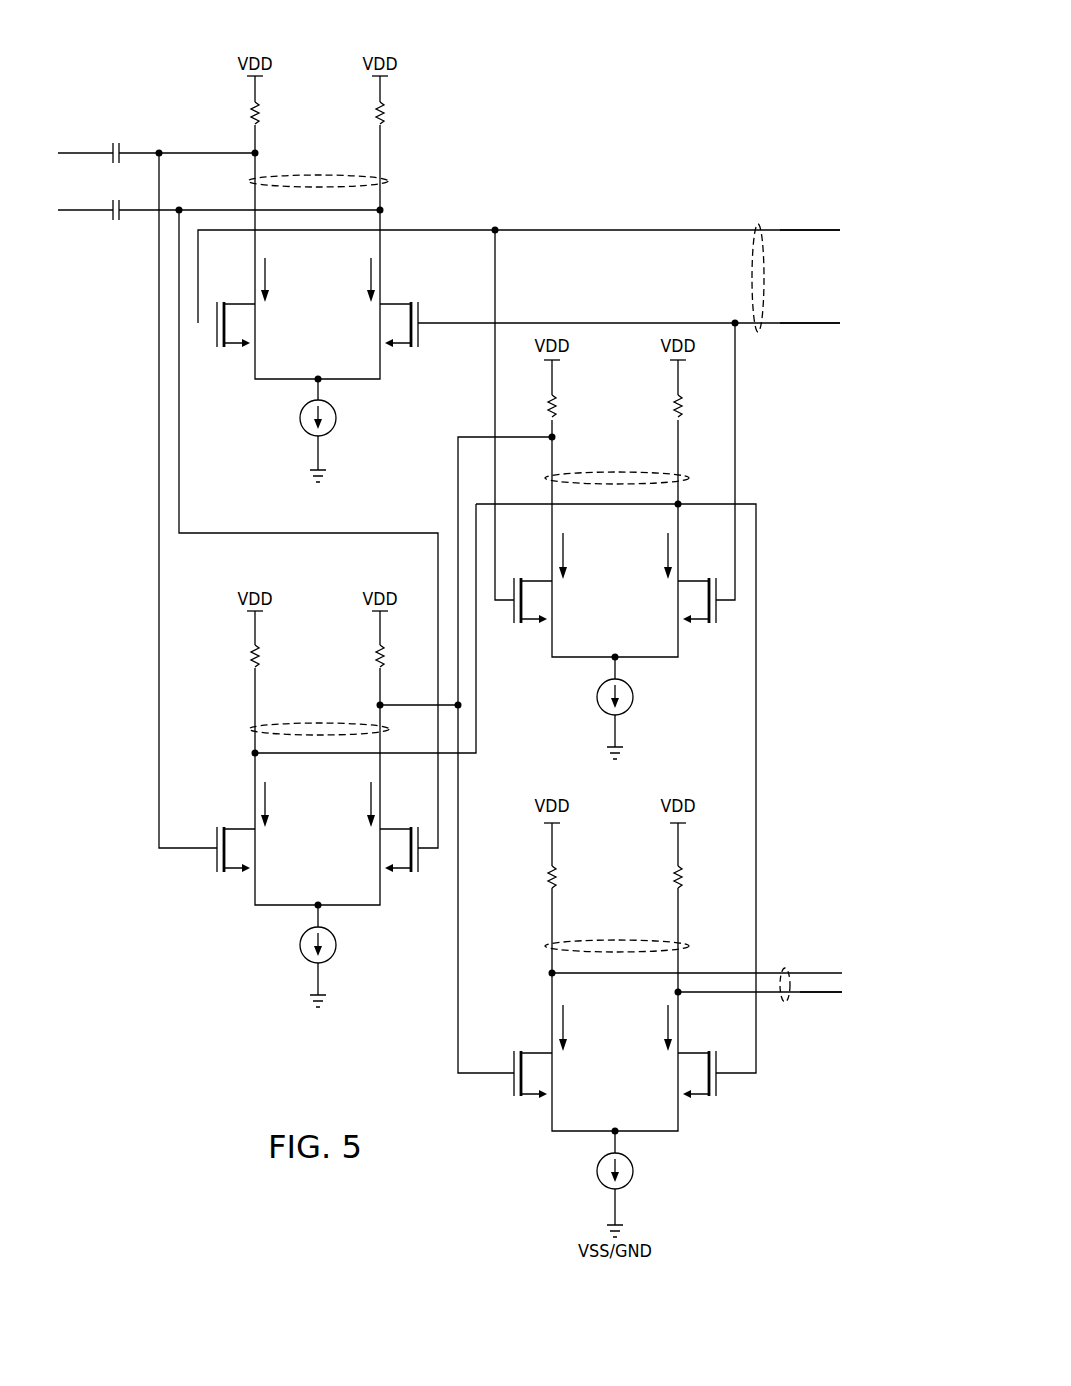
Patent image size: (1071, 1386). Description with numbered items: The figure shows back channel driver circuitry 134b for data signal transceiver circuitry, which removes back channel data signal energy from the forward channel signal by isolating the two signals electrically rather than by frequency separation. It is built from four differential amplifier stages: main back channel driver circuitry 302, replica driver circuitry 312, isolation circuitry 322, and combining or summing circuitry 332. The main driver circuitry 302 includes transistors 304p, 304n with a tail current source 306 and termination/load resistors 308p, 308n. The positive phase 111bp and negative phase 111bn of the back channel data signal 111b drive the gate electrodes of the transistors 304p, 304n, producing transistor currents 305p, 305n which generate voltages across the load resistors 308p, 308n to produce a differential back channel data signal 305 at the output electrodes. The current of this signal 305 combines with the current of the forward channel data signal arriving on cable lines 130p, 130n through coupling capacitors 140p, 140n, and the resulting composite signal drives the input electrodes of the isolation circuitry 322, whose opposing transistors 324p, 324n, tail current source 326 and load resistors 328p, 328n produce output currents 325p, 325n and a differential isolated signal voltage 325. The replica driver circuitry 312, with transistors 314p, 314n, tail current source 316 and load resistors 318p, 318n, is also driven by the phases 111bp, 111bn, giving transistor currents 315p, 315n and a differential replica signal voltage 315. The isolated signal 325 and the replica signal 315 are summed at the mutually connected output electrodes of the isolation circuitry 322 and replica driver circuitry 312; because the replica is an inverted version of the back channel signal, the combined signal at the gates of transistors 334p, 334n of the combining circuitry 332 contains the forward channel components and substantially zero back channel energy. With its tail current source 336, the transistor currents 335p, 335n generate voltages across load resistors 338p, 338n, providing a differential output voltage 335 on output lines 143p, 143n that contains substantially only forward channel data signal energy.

The positive cable line 130p is at (77, 151).
The negative cable line 130n is at (77, 213).
The coupling capacitor 140p is at (115, 144).
The coupling capacitor 140n is at (118, 219).
The back channel driver circuitry 134b is at (677, 140).
The termination/load resistor 308p is at (253, 113).
The termination/load resistor 308n is at (377, 110).
The differential back channel data signal 305 is at (250, 181).
The transistor current 305p is at (268, 273).
The transistor current 305n is at (368, 273).
The transistor 304p is at (205, 333).
The transistor 304n is at (433, 308).
The main back channel driver circuitry 302 is at (335, 339).
The tail current source 306 is at (299, 418).
The back channel data signal 111b is at (758, 224).
The positive phase of back channel data signal 111bp is at (800, 228).
The negative phase of back channel data signal 111bn is at (802, 324).
The load resistor 318p is at (557, 404).
The load resistor 318n is at (674, 413).
The differential signal voltage 315 is at (686, 478).
The transistor current 315p is at (566, 549).
The transistor current 315n is at (666, 550).
The transistor 314p is at (502, 617).
The transistor 314n is at (727, 617).
The replica driver circuitry 312 is at (637, 616).
The tail current source 316 is at (636, 699).
The load resistor 328p is at (259, 657).
The load resistor 328n is at (377, 665).
The differential isolated signal voltage 325 is at (251, 732).
The output current 325p is at (268, 800).
The output current 325n is at (368, 800).
The transistor 324p is at (205, 862).
The transistor 324n is at (430, 862).
The isolation circuitry 322 is at (337, 864).
The tail current source 326 is at (299, 946).
The load resistor 338p is at (558, 876).
The load resistor 338n is at (676, 887).
The differential output voltage 335 is at (549, 948).
The transistor current 335p is at (568, 1021).
The transistor current 335n is at (667, 1023).
The transistor 334p is at (514, 1086).
The transistor 334n is at (728, 1086).
The combining circuitry 332 is at (640, 1091).
The tail current source 336 is at (640, 1168).
The positive output line 143p is at (715, 972).
The negative output line 143n is at (812, 994).